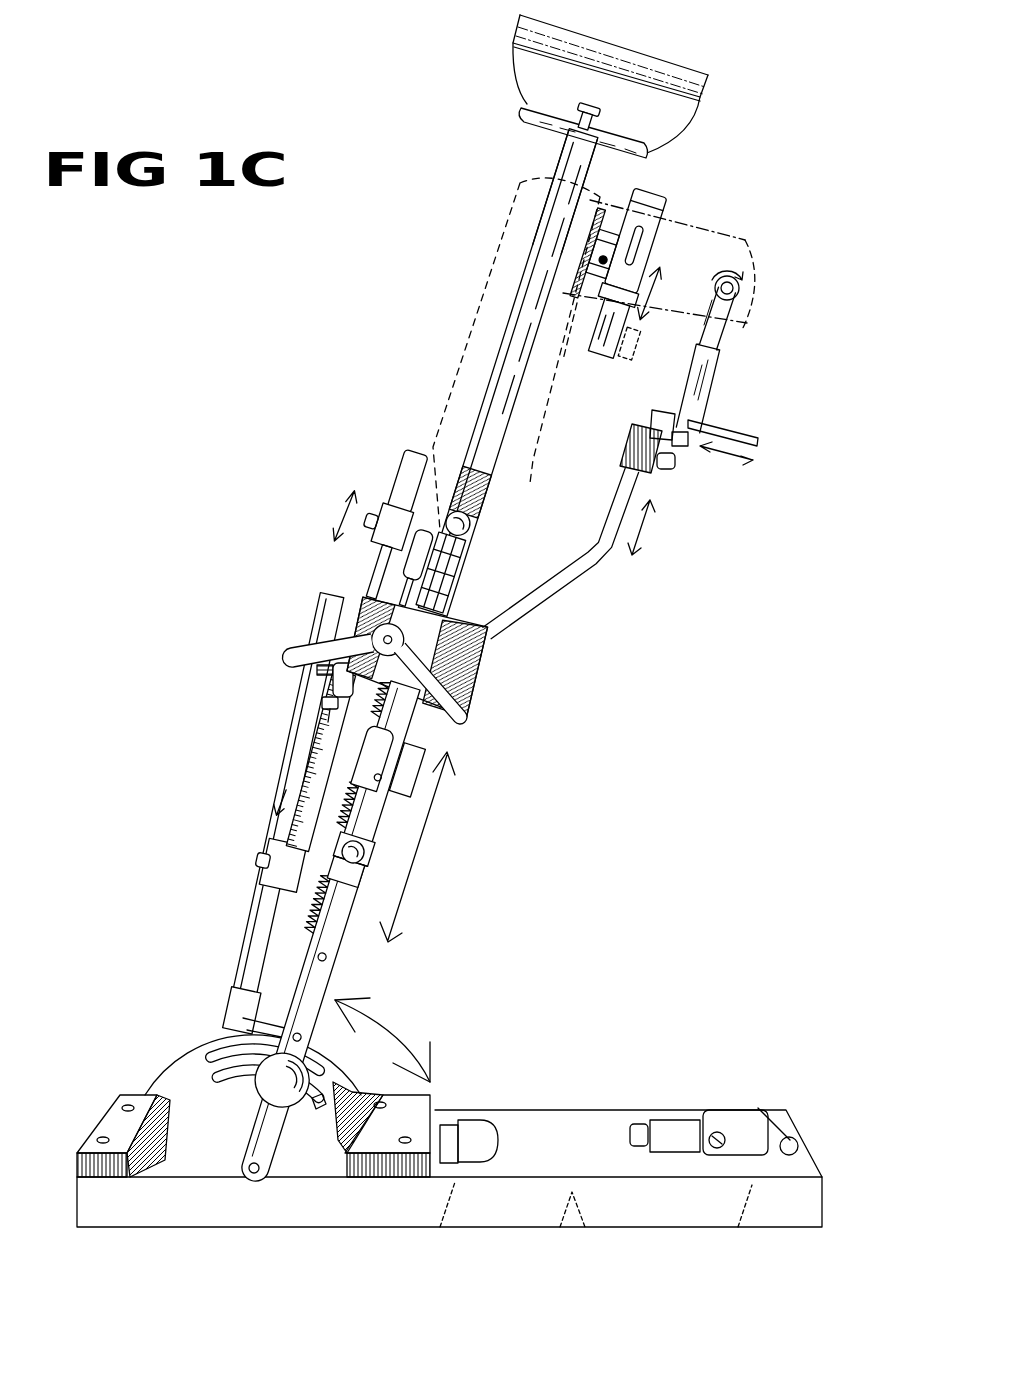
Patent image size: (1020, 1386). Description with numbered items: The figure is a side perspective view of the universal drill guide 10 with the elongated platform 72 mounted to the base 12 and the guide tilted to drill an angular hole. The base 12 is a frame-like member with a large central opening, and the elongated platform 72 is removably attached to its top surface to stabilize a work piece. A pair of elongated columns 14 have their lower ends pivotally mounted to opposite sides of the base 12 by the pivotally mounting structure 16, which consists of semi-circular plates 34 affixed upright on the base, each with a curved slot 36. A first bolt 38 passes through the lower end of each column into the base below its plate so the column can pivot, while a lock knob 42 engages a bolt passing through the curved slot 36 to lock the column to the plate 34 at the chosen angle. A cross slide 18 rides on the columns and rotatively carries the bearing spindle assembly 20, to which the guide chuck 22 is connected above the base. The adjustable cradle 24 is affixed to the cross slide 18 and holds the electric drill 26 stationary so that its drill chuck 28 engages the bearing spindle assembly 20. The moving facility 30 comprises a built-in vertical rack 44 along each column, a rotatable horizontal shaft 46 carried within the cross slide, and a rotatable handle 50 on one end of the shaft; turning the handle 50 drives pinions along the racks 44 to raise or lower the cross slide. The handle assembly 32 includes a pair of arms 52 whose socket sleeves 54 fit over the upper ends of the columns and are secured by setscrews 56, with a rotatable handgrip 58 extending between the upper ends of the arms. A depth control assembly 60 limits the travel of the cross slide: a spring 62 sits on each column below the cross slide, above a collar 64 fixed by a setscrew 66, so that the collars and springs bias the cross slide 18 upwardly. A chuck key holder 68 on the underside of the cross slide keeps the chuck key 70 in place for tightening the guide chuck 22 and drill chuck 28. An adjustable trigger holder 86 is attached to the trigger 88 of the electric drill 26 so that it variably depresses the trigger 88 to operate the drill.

The universal drill guide 10 is at (292, 599).
The base 12 is at (120, 1113).
The elongated columns 14 is at (330, 972).
The pivotally mounting structure 16 is at (182, 1050).
The cross slide 18 is at (480, 666).
The bearing spindle assembly 20 is at (437, 740).
The guide chuck 22 is at (435, 785).
The adjustable cradle 24 is at (600, 573).
The electric drill 26 is at (705, 225).
The drill chuck 28 is at (490, 541).
The moving facility 30 is at (274, 643).
The handle assembly 32 is at (546, 157).
The semi-circular plates 34 is at (212, 1052).
The curved slot 36 is at (320, 1108).
The first bolts 38 is at (265, 1172).
The lock knobs 42 is at (270, 1093).
The vertical rack 44 is at (315, 920).
The rotatable horizontal shaft 46 is at (352, 630).
The rotatable handle 50 is at (470, 710).
The arms 52 is at (515, 300).
The socket sleeves 54 is at (466, 590).
The setscrews 56 is at (470, 525).
The rotatable handgrip 58 is at (510, 70).
The depth control assembly 60 is at (297, 832).
The springs 62 is at (370, 850).
The collars 64 is at (365, 882).
The setscrews 66 is at (375, 866).
The chuck key holder 68 is at (330, 712).
The chuck key 70 is at (318, 678).
The elongated platform 72 is at (555, 1112).
The adjustable trigger holder 86 is at (652, 195).
The trigger 88 is at (634, 345).